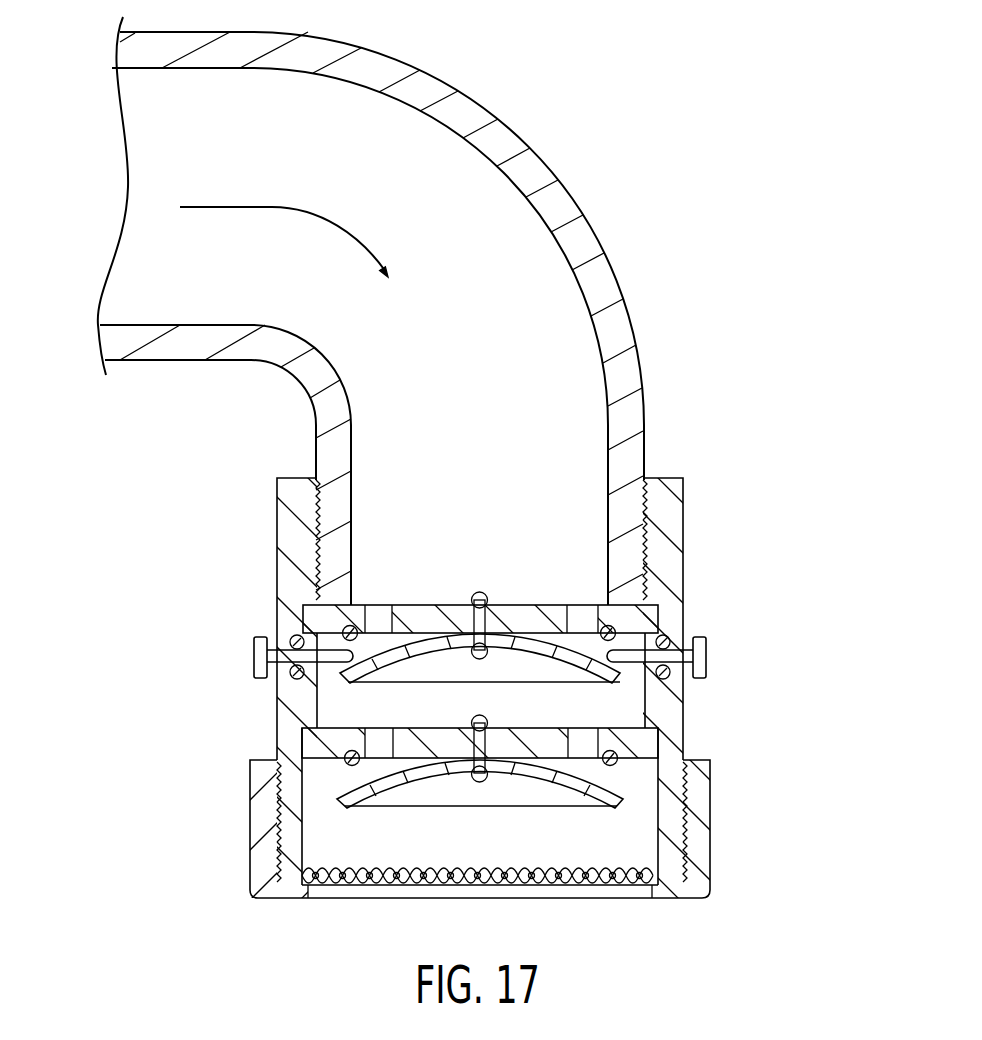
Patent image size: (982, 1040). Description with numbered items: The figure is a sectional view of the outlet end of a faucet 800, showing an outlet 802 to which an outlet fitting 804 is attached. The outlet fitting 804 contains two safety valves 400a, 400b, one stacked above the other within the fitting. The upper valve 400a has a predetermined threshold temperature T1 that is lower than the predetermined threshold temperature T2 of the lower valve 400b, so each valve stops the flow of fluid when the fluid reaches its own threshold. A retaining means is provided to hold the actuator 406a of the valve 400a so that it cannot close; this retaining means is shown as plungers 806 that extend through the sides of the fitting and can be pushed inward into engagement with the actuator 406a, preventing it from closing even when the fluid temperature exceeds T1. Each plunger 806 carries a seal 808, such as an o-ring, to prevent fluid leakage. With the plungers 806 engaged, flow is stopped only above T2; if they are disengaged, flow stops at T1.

The faucet 800 is at (636, 212).
The outlet 802 is at (645, 408).
The outlet fitting 804 is at (742, 768).
The valve 400a is at (645, 620).
The valve 400b is at (647, 738).
The actuator 406a is at (617, 676).
The plunger 806 is at (253, 658).
The seal 808 is at (293, 636).